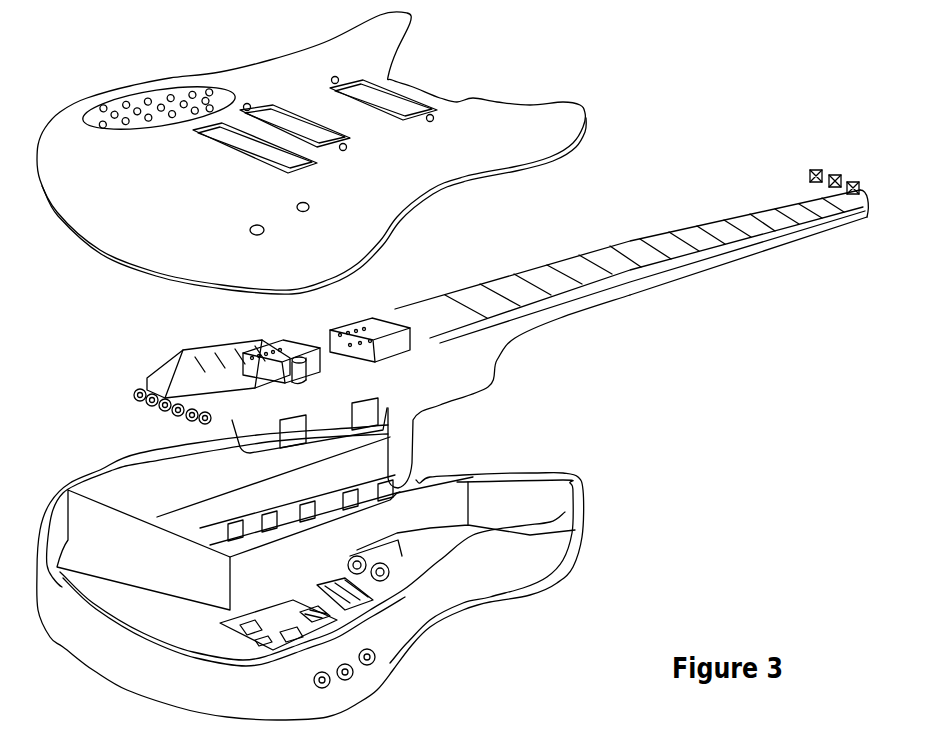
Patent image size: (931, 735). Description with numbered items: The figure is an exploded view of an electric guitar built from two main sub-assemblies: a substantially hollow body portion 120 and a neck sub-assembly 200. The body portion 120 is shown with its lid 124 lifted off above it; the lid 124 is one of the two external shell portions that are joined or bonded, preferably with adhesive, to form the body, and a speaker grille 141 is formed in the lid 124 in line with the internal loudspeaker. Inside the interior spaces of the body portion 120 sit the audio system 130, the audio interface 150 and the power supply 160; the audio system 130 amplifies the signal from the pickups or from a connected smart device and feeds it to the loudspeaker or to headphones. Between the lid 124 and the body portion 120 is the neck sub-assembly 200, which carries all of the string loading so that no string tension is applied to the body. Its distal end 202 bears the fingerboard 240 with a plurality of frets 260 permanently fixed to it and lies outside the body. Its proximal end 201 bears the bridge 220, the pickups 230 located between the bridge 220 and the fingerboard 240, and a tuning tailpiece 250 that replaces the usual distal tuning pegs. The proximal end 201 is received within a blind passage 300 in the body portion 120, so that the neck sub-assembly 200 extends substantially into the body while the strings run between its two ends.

The lid 124 is at (513, 123).
The speaker grille 141 is at (163, 96).
The neck sub-assembly 200 is at (628, 303).
The fingerboard 240 is at (620, 250).
The frets 260 is at (688, 237).
The distal end 202 is at (801, 167).
The blind passage 300 is at (423, 477).
The proximal end 201 is at (407, 376).
The bridge 220 is at (217, 350).
The pickups 230 is at (350, 323).
The tuning tailpiece 250 is at (215, 407).
The body portion 120 is at (392, 572).
The power supply 160 is at (403, 553).
The audio interface 150 is at (360, 600).
The audio system 130 is at (293, 633).